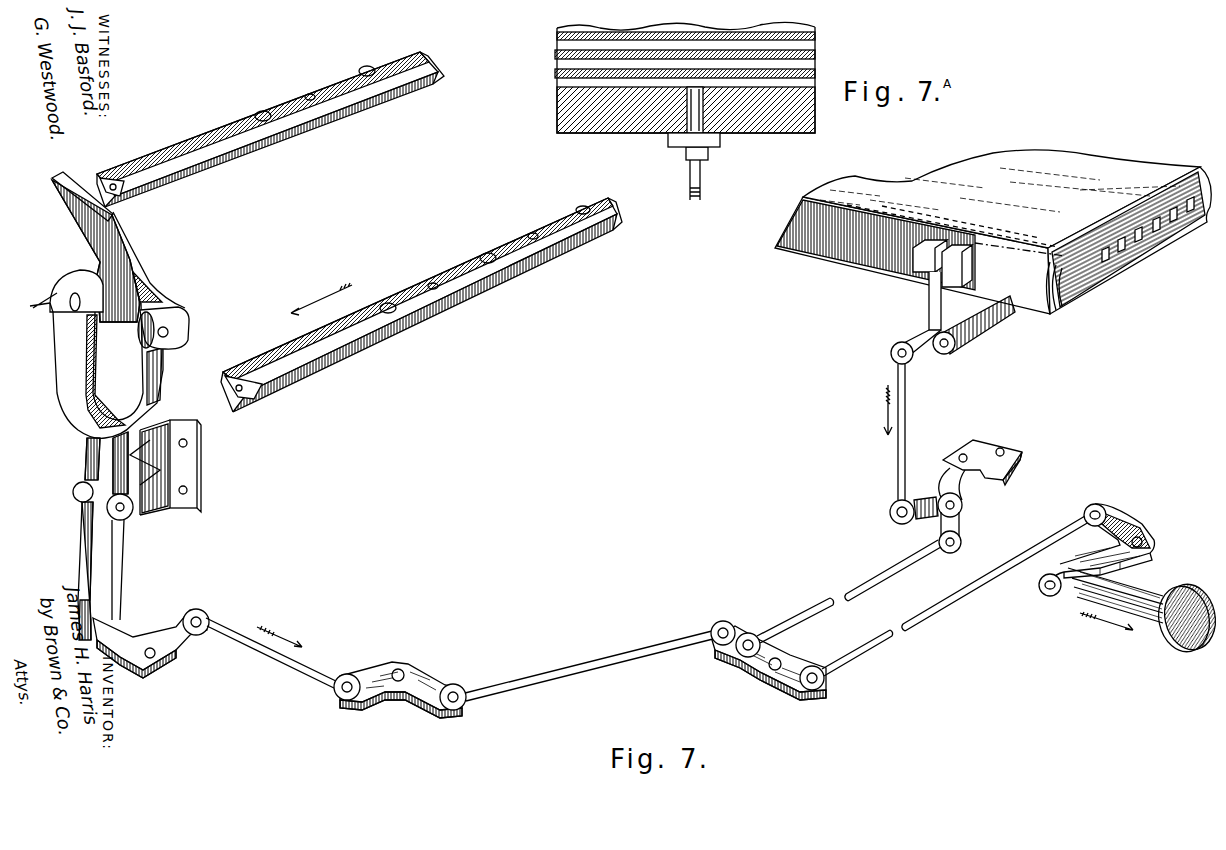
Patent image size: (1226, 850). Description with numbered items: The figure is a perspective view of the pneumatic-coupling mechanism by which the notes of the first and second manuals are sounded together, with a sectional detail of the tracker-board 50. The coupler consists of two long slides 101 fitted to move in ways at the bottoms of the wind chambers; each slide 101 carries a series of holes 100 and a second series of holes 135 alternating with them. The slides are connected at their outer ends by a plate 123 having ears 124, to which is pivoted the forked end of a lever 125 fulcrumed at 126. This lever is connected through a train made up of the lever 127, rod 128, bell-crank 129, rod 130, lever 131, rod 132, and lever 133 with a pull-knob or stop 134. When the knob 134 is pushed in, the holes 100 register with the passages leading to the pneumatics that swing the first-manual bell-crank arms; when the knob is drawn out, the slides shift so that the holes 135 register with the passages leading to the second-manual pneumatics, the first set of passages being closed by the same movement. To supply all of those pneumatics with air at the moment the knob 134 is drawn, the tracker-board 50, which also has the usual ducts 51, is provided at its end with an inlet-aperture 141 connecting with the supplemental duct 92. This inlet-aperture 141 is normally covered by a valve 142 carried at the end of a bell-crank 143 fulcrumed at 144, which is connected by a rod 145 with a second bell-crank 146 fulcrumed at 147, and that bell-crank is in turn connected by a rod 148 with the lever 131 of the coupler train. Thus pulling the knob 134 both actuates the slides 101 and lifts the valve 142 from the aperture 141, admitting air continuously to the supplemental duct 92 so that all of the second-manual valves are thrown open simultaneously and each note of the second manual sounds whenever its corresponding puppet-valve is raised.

In FIG. 7A, the tracker-board 50 is at (558, 108).
In FIG. 7, the tracker-board 50 is at (1153, 248).
In FIG. 7A, the ducts or passages 51 is at (812, 62).
In FIG. 7, the ducts or passages 51 is at (1219, 236).
In FIG. 7A, the supplemental duct 92 is at (806, 85).
In FIG. 7, the supplemental duct 92 is at (1110, 273).
In FIG. 7, the holes 100 is at (268, 103).
In FIG. 7, the slides 101 is at (208, 168).
In FIG. 7, the plate 123 is at (137, 300).
In FIG. 7, the ears 124 is at (57, 295).
In FIG. 7, the lever 125 is at (90, 433).
In FIG. 7, the fulcrum 126 is at (124, 509).
In FIG. 7, the lever 127 is at (185, 645).
In FIG. 7, the rod 128 is at (312, 665).
In FIG. 7, the bell-crank 129 is at (430, 680).
In FIG. 7, the rod 130 is at (589, 666).
In FIG. 7, the lever 131 is at (760, 676).
In FIG. 7, the rod 132 is at (862, 660).
In FIG. 7, the lever 133 is at (1118, 523).
In FIG. 7, the pull-knob or stop 134 is at (1198, 593).
In FIG. 7, the holes 135 is at (310, 94).
In FIG. 7A, the inlet-aperture 141 is at (705, 117).
In FIG. 7, the inlet-aperture 141 is at (943, 258).
In FIG. 7A, the valve 142 is at (673, 141).
In FIG. 7, the valve 142 is at (913, 263).
In FIG. 7, the bell-crank 143 is at (917, 333).
In FIG. 7, the fulcrum 144 is at (950, 340).
In FIG. 7, the rod 145 is at (906, 432).
In FIG. 7, the bell-crank 146 is at (952, 522).
In FIG. 7, the fulcrum 147 is at (955, 503).
In FIG. 7, the rod 148 is at (893, 570).